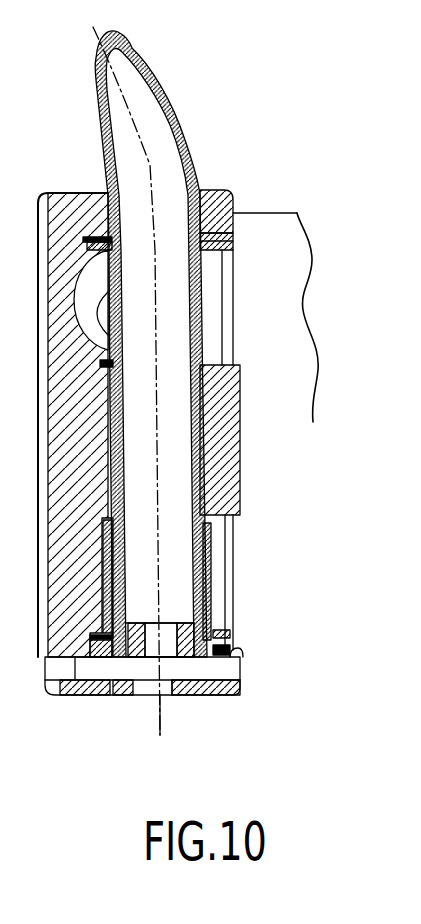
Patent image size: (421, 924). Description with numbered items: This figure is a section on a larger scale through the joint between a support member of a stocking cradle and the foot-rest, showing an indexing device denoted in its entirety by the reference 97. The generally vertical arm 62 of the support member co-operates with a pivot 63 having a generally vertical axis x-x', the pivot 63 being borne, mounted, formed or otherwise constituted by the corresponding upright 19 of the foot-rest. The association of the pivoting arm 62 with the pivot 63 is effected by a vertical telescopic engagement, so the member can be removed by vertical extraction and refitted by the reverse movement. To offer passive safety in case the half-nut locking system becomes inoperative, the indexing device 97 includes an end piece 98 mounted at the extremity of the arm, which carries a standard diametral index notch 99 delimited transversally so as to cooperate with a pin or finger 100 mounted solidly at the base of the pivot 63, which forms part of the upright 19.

The upright 19 is at (264, 222).
The arm 62 is at (192, 253).
The pivot 63 is at (242, 431).
The vertical axis xx' is at (188, 381).
The indexing device 97 is at (152, 697).
The end piece 98 is at (191, 618).
The diametral index notch 99 is at (182, 695).
The pin or finger 100 is at (243, 662).